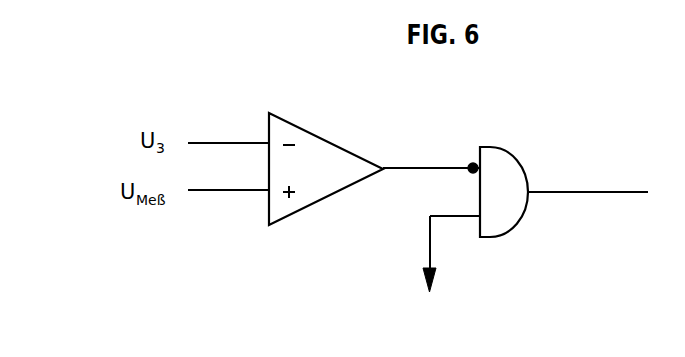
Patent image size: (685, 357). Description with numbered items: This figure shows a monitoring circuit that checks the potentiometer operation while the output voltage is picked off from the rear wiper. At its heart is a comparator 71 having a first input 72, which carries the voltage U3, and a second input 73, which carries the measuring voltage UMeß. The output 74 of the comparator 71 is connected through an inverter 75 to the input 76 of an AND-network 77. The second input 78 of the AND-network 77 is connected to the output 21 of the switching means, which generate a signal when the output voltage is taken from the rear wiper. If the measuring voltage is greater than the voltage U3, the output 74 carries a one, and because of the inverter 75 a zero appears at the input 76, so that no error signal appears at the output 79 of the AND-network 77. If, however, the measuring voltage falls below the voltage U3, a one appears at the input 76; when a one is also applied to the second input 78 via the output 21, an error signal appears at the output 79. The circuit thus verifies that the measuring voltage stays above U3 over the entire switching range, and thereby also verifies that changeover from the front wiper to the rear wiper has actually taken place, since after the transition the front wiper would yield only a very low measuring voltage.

The comparator 71 is at (318, 145).
The first input 72 is at (243, 143).
The second input 73 is at (247, 190).
The output 74 is at (393, 168).
The inverter 75 is at (468, 165).
The input 76 is at (477, 164).
The AND-network 77 is at (513, 170).
The second input 78 is at (467, 216).
The output 79 is at (597, 192).
The output 21 is at (426, 270).